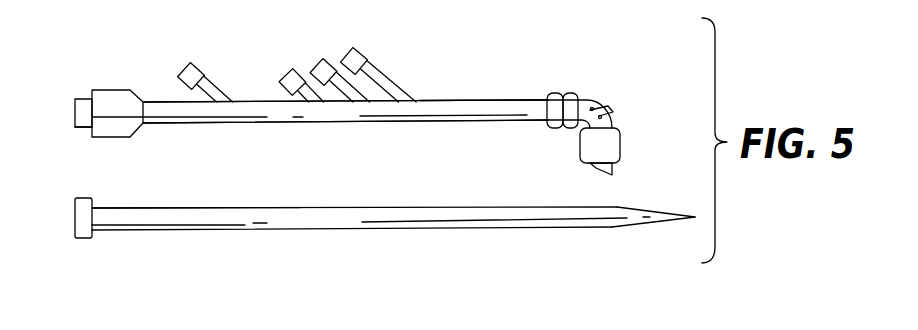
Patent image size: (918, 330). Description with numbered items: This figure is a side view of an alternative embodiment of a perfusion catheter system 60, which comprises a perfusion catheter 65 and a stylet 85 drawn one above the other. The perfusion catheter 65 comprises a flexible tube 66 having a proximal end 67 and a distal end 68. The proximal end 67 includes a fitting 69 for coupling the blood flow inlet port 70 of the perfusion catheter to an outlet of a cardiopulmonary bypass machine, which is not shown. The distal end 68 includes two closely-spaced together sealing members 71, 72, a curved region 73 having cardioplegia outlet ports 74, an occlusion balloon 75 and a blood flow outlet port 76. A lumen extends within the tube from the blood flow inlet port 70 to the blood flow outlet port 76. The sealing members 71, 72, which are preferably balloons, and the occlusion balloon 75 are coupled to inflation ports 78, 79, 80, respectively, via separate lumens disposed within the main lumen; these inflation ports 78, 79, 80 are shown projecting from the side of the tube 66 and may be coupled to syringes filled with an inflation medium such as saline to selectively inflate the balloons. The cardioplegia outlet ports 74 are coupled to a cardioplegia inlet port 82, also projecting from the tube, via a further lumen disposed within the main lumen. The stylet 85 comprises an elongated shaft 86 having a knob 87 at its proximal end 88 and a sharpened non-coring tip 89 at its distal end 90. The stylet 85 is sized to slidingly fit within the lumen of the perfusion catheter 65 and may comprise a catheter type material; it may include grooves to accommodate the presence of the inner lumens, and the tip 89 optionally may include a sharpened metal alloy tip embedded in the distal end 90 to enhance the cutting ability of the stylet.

The catheter system 60 is at (463, 46).
The perfusion catheter 65 is at (411, 133).
The flexible tube 66 is at (280, 117).
The proximal end 67 is at (115, 96).
The distal end 68 is at (505, 100).
The fitting 69 is at (76, 107).
The blood flow inlet port 70 is at (75, 120).
The sealing member 71 is at (550, 127).
The sealing member 72 is at (571, 93).
The curved region 73 is at (590, 101).
The cardioplegia outlet ports 74 is at (612, 109).
The occlusion balloon 75 is at (622, 148).
The blood flow outlet port 76 is at (596, 170).
The inflation port 78 is at (316, 56).
The inflation port 79 is at (357, 48).
The inflation port 80 is at (293, 67).
The cardioplegia inlet port 82 is at (198, 61).
The stylet 85 is at (182, 241).
The elongated shaft 86 is at (307, 222).
The knob 87 is at (80, 220).
The proximal end 88 is at (148, 208).
The sharpened non-coring tip 89 is at (692, 214).
The distal end 90 is at (603, 225).